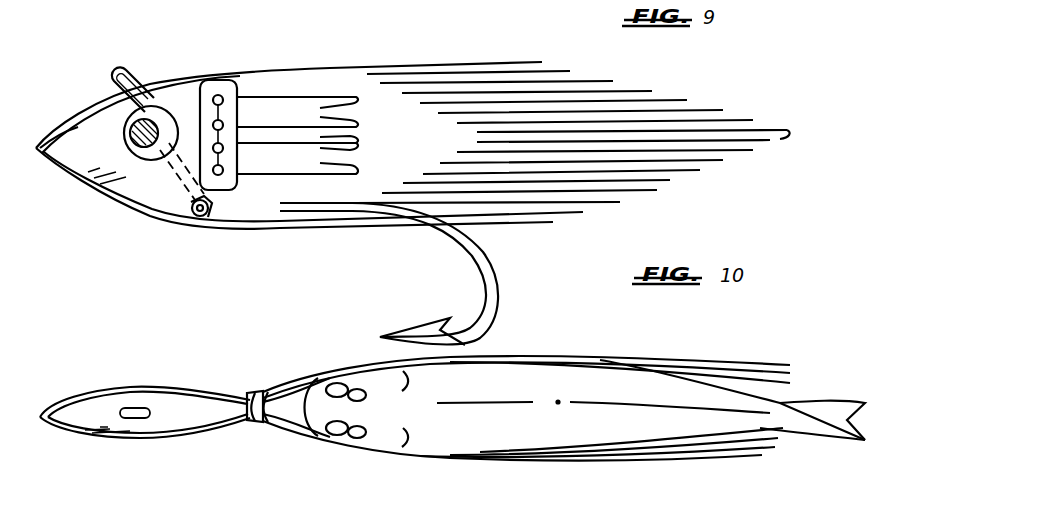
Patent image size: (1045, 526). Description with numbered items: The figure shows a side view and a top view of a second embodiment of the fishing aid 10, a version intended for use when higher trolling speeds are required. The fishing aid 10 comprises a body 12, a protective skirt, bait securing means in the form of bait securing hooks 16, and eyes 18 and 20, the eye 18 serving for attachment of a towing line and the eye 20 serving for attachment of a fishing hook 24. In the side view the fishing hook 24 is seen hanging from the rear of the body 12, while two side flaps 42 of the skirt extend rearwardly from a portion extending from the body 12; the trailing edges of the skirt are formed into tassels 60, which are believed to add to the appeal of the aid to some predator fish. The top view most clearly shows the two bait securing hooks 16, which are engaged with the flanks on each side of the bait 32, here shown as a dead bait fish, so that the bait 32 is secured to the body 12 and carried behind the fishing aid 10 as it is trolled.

In FIG. 9, the fishing aid 10 is at (172, 232).
In FIG. 9, the body 12 is at (76, 130).
In FIG. 10, the body 12 is at (78, 400).
In FIG. 9, the bait securing hooks 16 is at (290, 94).
In FIG. 9, the eye 18 is at (128, 70).
In FIG. 9, the eye 20 is at (199, 222).
In FIG. 9, the fishing hook 24 is at (505, 298).
In FIG. 10, the bait 32 is at (470, 433).
In FIG. 9, the side flaps 42 is at (518, 108).
In FIG. 9, the tassels 60 is at (644, 182).